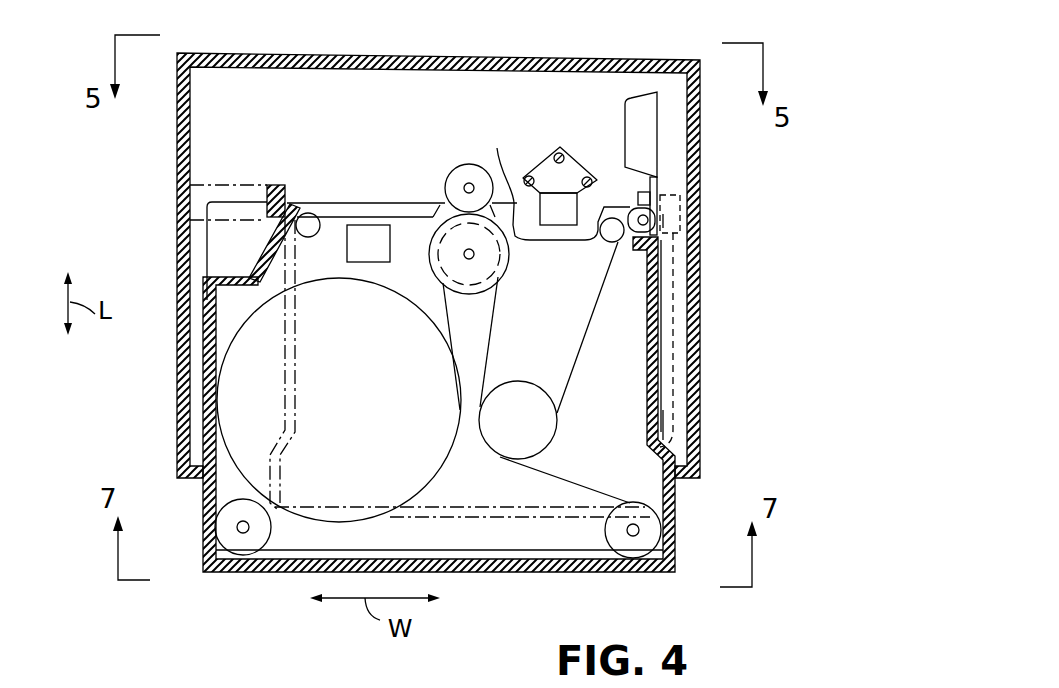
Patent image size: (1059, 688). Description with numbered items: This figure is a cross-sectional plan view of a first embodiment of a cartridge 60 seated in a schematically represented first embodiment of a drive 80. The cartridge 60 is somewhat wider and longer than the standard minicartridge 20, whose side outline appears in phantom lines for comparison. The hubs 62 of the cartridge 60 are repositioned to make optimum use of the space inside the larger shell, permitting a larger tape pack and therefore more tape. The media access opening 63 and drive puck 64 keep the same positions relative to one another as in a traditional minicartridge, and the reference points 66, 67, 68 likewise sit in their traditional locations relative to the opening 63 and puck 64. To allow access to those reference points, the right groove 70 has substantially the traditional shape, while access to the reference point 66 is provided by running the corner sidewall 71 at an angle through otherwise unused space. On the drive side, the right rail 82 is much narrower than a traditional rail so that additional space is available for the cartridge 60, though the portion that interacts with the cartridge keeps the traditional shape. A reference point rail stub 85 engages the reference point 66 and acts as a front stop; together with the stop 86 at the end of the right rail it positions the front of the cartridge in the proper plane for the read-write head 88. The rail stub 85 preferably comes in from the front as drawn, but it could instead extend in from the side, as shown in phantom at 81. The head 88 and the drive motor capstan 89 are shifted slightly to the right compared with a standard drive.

The standard minicartridge 20 is at (480, 528).
The cartridge 60 is at (265, 578).
The hubs 62 is at (323, 414).
The media access opening 63 is at (555, 180).
The drive puck 64 is at (505, 268).
The reference point 66 is at (262, 222).
The reference point 67 is at (666, 221).
The reference point 68 is at (666, 393).
The right groove 70 is at (657, 367).
The corner sidewall 71 is at (257, 272).
The drive 80 is at (300, 48).
The phantom rail stub position 81 is at (213, 183).
The right rail 82 is at (677, 268).
The reference point rail stub 85 is at (272, 184).
The stop 86 is at (633, 193).
The read-write head 88 is at (553, 207).
The drive motor capstan 89 is at (453, 170).